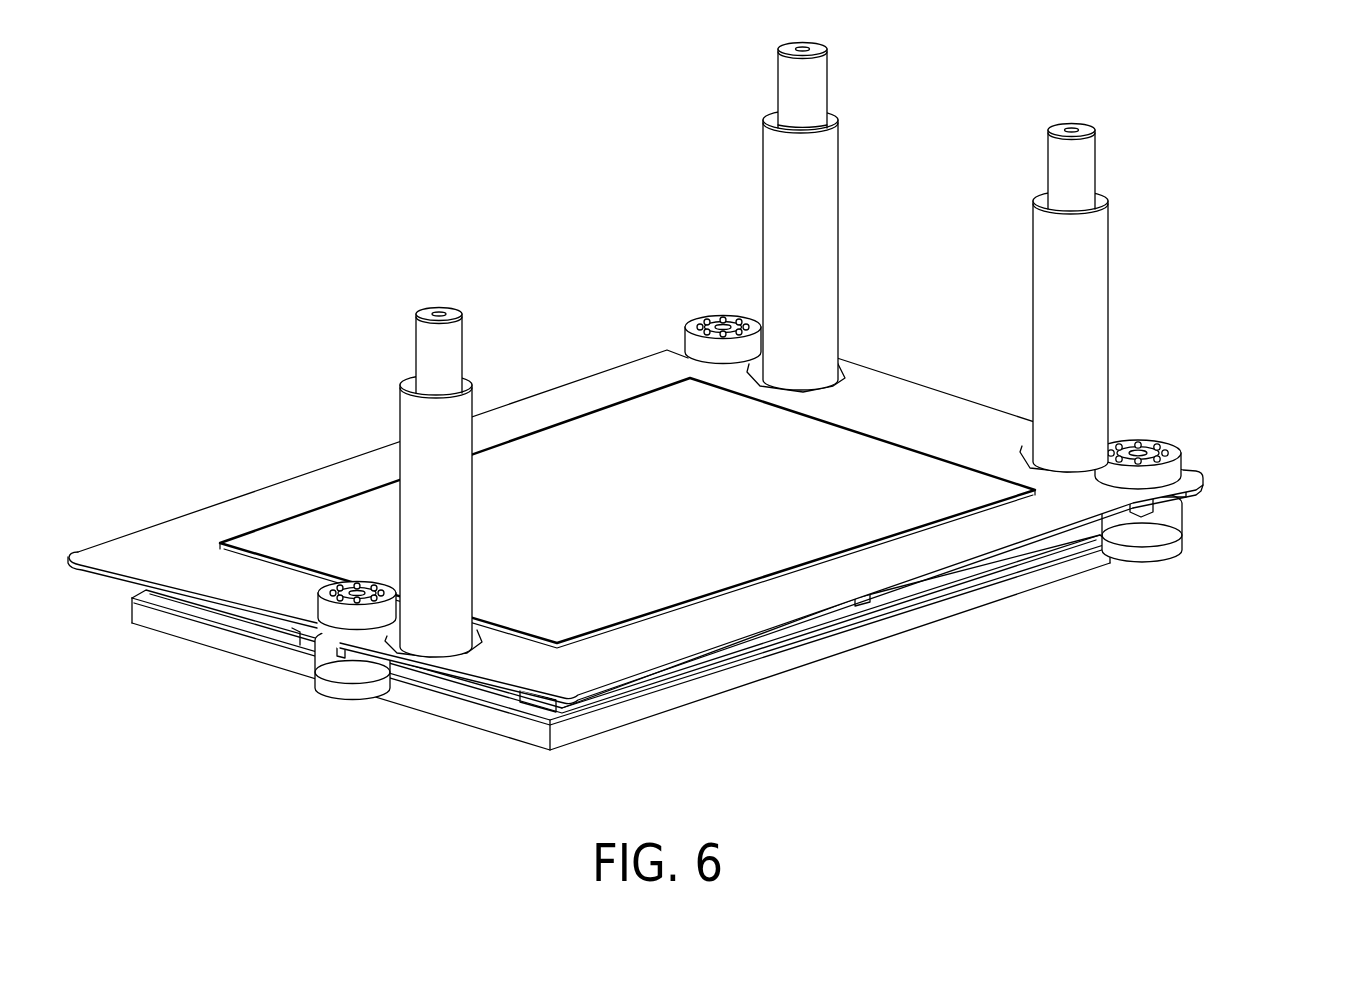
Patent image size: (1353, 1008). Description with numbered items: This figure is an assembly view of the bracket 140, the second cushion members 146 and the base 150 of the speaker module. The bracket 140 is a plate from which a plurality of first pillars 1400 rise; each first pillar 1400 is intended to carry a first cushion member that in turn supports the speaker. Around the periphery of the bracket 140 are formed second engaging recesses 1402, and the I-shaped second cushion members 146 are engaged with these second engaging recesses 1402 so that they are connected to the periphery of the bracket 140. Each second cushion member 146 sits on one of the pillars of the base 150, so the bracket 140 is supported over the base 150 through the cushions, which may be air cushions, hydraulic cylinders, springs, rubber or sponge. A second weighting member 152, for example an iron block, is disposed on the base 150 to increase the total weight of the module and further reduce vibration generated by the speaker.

The bracket 140 is at (568, 382).
The first pillars 1400 is at (1107, 322).
The second cushion members 146 is at (1175, 440).
The second engaging recesses 1402 is at (1180, 491).
The base 150 is at (1020, 593).
The second weighting member 152 is at (735, 648).